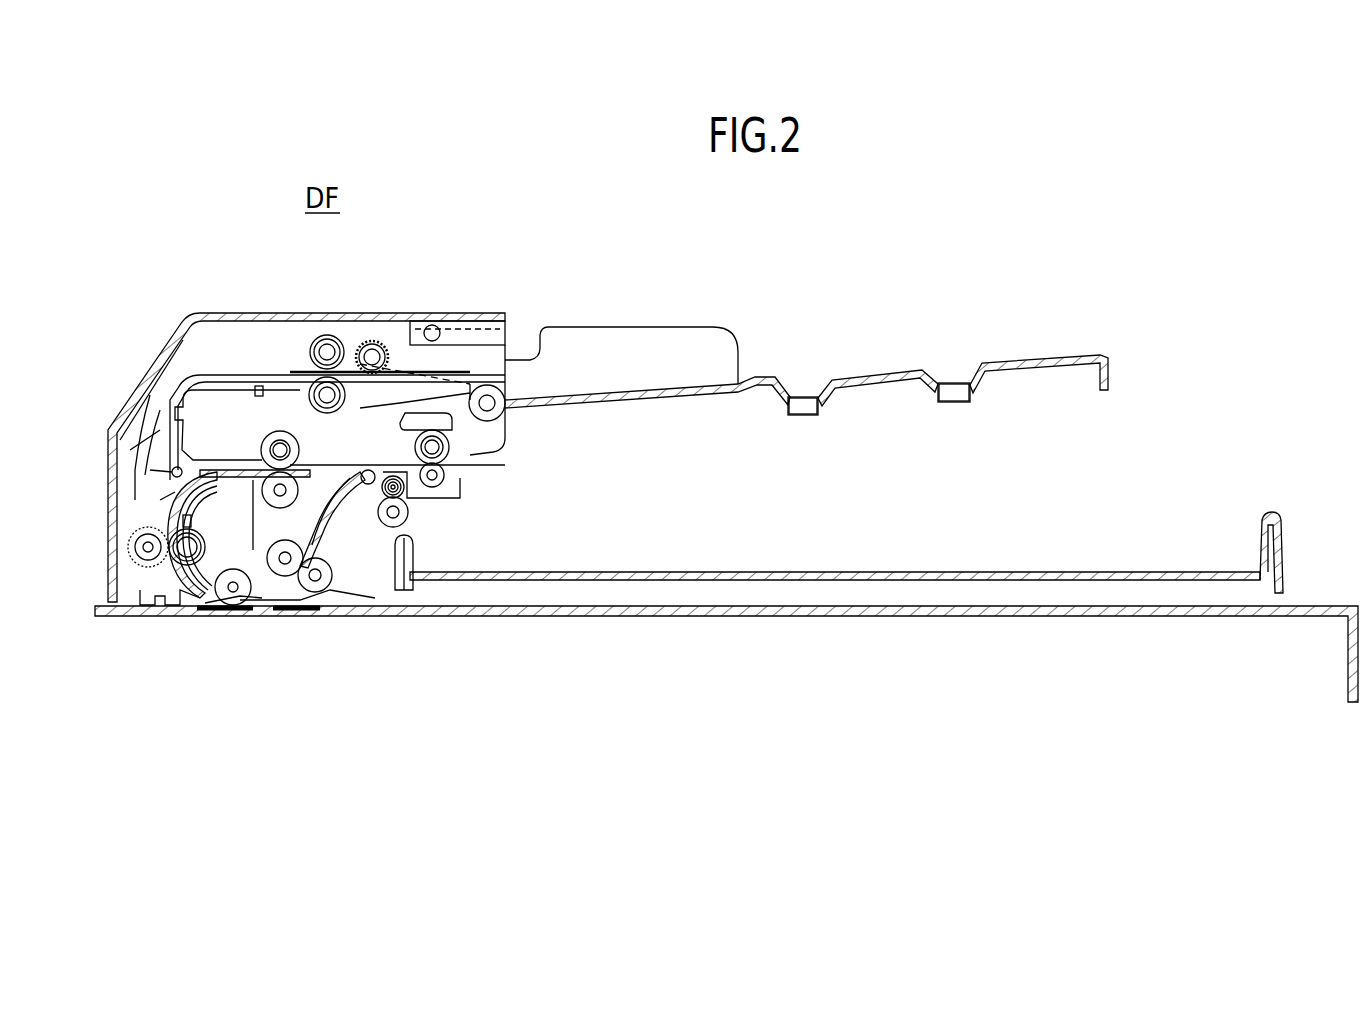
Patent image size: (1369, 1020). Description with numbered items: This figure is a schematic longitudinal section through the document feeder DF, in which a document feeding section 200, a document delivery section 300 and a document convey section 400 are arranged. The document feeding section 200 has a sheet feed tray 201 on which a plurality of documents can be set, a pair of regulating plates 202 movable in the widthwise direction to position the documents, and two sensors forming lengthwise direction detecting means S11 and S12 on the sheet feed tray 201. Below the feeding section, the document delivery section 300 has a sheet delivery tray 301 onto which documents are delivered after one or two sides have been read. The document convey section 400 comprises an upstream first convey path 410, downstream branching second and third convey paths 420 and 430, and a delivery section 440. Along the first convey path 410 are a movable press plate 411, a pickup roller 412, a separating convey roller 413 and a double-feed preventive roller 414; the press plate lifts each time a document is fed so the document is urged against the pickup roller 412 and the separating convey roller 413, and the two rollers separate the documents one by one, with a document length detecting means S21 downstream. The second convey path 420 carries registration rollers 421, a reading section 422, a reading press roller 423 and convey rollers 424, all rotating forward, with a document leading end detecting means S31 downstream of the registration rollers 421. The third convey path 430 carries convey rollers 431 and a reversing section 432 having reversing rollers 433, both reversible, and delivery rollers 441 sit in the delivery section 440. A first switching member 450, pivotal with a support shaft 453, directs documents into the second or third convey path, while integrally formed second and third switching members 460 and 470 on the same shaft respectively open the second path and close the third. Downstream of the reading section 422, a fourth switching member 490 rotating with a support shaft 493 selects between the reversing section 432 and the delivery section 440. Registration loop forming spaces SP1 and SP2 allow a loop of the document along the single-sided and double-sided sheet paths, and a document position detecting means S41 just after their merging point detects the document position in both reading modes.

The document feeding section 200 is at (806, 367).
The sheet feed tray 201 is at (757, 384).
The regulating plates 202 is at (635, 327).
The document delivery section 300 is at (726, 583).
The sheet delivery tray 301 is at (711, 571).
The document convey section 400 is at (292, 480).
The first convey path 410 is at (207, 366).
The movable press plate 411 is at (430, 405).
The pickup roller 412 is at (381, 342).
The separating convey roller 413 is at (320, 338).
The double-feed preventive roller 414 is at (311, 384).
The second convey path 420 is at (208, 585).
The registration rollers 421 is at (131, 560).
The reading section 422 is at (210, 619).
The reading press roller 423 is at (245, 613).
The convey rollers 424 is at (334, 592).
The third convey path 430 is at (384, 447).
The convey rollers 431 is at (304, 446).
The reversing section 432 is at (450, 449).
The reversing rollers 433 is at (446, 472).
The delivery section 440 is at (455, 519).
The delivery rollers 441 is at (410, 512).
The first switching member 450 is at (185, 445).
The support shaft 453 is at (172, 482).
The second switching member 460 is at (170, 490).
The third switching member 470 is at (185, 470).
The fourth switching member 490 is at (337, 495).
The support shaft 493 is at (366, 471).
The lengthwise direction detecting means S11 is at (803, 415).
The lengthwise direction detecting means S12 is at (953, 402).
The document length detecting means S21 is at (258, 386).
The document leading end detecting means S31 is at (192, 604).
The document position detecting means S41 is at (191, 521).
The registration loop forming space SP1 is at (172, 455).
The registration loop forming space SP2 is at (175, 415).